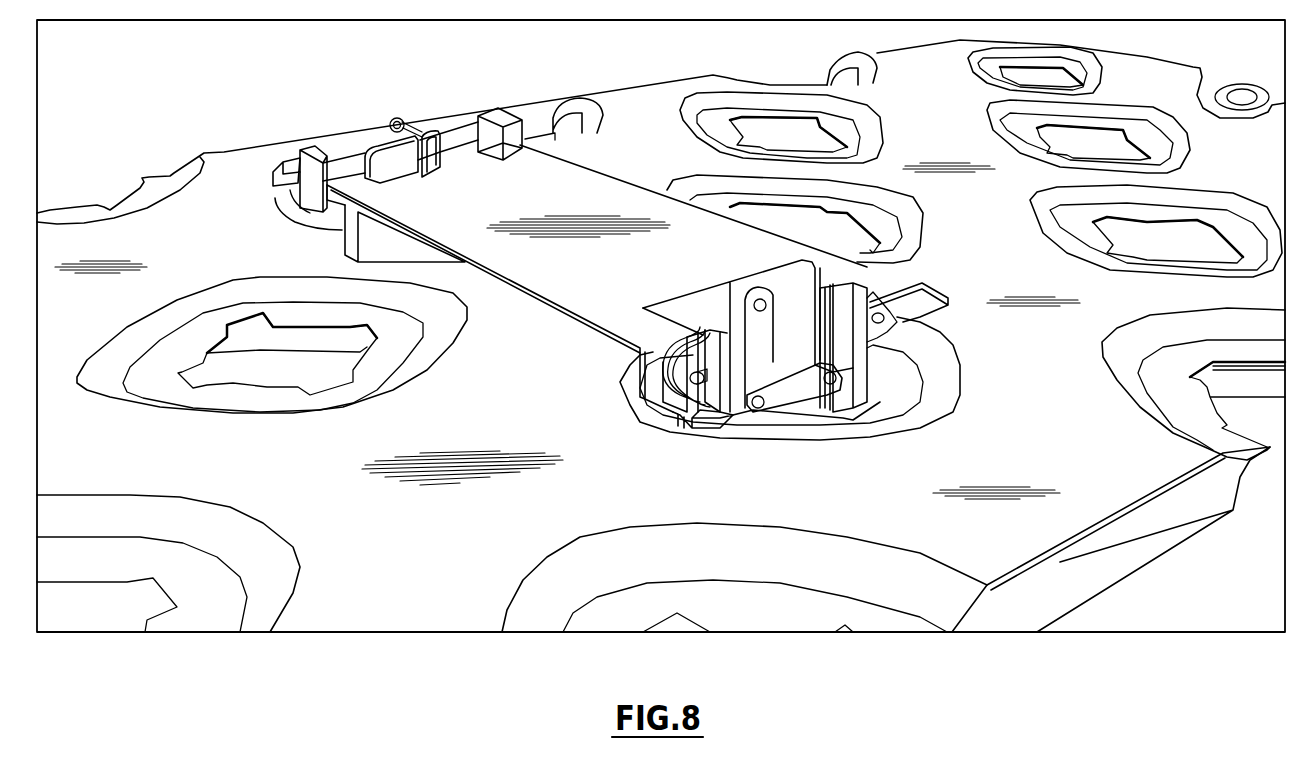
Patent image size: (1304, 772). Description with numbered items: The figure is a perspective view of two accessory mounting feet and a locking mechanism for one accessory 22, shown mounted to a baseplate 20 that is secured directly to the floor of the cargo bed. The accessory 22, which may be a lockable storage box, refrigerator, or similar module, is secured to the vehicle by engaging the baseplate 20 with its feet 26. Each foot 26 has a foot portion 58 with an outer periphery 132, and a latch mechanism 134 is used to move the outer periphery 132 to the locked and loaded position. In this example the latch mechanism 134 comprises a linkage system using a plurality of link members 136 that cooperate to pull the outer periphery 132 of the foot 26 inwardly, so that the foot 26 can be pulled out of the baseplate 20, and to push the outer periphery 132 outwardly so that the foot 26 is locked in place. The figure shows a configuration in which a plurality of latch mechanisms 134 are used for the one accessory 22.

The baseplate 20 is at (1036, 416).
The accessory 22 is at (553, 278).
The foot 26 is at (318, 244).
The foot portion 58 is at (372, 242).
The outer periphery 132 is at (703, 432).
The latch mechanism 134 is at (248, 212).
The link member 136 is at (753, 325).